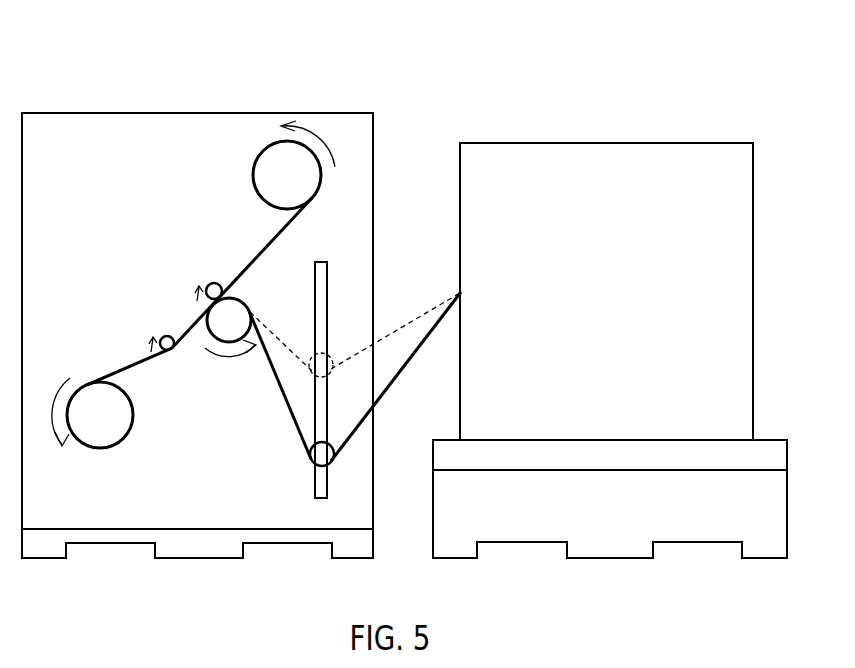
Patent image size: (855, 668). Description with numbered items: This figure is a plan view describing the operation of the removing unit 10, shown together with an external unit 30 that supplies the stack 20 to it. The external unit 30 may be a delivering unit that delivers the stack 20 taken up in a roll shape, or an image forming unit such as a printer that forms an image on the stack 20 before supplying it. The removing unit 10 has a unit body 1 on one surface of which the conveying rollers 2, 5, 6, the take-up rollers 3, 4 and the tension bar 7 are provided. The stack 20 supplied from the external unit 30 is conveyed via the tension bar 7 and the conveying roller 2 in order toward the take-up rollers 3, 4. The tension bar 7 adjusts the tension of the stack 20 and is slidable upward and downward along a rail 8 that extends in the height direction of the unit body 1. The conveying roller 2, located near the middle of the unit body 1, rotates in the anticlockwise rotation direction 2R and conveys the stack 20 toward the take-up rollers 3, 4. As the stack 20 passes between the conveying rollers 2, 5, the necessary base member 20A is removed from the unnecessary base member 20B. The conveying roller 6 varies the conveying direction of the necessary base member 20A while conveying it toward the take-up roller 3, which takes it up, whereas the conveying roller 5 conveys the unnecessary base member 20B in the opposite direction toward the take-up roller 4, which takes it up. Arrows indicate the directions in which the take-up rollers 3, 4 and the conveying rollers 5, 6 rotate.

The removing unit 10 is at (196, 83).
The unit body 1 is at (365, 203).
The conveying roller 2 is at (237, 308).
The rotation direction 2R is at (222, 358).
The take-up roller 3 is at (103, 438).
The take-up roller 4 is at (262, 177).
The conveying roller 5 is at (207, 286).
The conveying roller 6 is at (164, 335).
The tension bar 7 is at (334, 457).
The rail 8 is at (316, 486).
The stack 20 is at (407, 366).
The necessary base member 20A is at (117, 372).
The unnecessary base member 20B is at (250, 252).
The external unit 30 is at (623, 118).